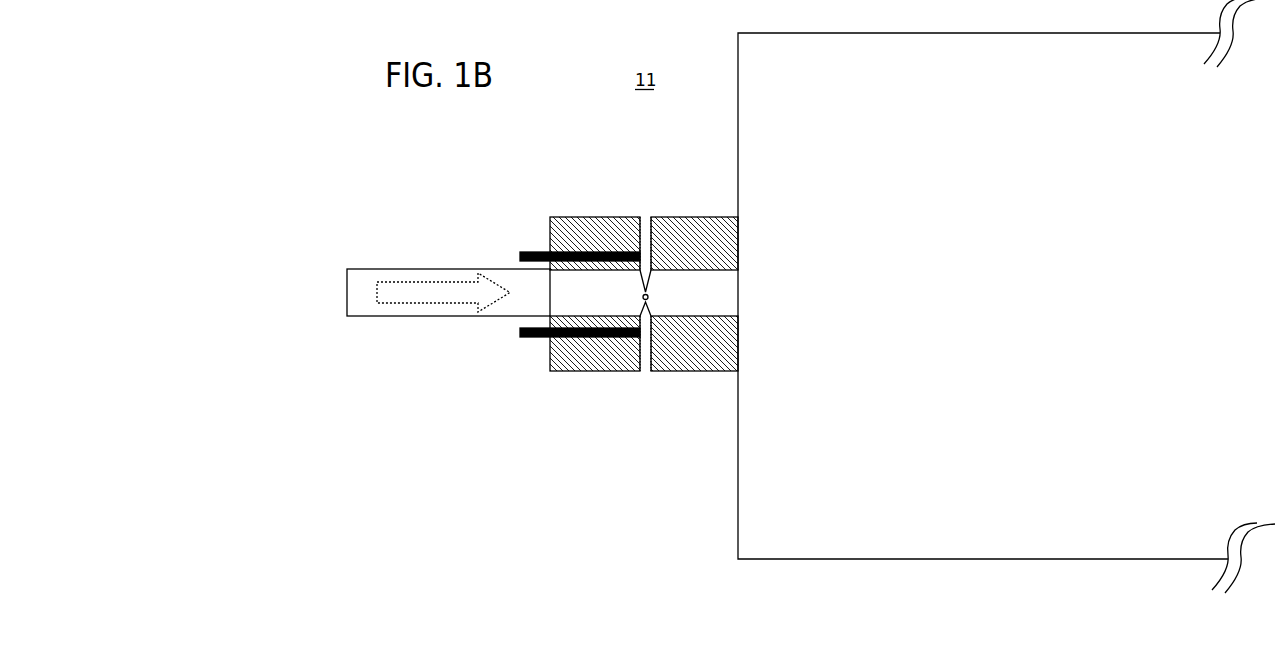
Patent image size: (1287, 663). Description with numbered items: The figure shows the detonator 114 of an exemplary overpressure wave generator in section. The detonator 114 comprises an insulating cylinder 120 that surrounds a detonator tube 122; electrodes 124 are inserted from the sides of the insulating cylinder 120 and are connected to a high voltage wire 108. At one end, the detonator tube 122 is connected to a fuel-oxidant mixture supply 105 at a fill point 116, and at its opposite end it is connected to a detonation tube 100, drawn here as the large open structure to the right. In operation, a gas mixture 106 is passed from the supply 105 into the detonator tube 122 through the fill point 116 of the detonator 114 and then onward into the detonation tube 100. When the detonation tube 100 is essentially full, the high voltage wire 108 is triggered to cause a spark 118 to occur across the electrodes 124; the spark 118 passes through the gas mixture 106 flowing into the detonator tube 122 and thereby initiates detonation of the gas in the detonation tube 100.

The detonation tube 100 is at (752, 90).
The fuel-oxidant mixture supply 105 is at (433, 317).
The gas mixture 106 is at (380, 297).
The high voltage wire 108 is at (520, 255).
The detonator 114 is at (590, 296).
The fill point 116 is at (550, 290).
The spark 118 is at (568, 245).
The insulating cylinder 120 is at (603, 367).
The detonator tube 122 is at (727, 293).
The electrodes 124 is at (686, 326).